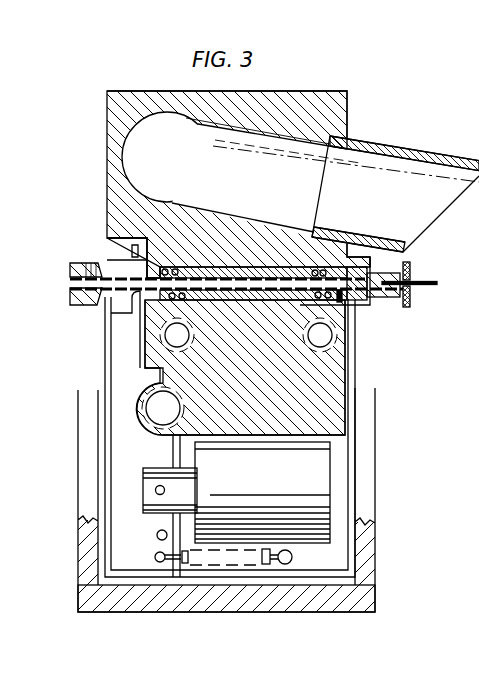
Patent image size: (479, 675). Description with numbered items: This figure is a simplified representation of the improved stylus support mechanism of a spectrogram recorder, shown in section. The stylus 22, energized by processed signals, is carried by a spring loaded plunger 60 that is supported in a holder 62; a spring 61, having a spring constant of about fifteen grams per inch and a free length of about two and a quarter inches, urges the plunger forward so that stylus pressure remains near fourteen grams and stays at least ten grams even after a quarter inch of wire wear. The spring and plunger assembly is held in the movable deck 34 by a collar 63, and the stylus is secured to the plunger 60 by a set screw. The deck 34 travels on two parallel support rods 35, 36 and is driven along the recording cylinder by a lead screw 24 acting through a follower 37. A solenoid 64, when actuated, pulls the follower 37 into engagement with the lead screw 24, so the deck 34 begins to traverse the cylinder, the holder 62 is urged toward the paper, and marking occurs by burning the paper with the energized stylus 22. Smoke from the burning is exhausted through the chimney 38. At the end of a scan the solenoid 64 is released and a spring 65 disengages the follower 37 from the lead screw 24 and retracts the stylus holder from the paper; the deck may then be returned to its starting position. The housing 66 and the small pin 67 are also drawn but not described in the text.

The stylus 22 is at (421, 283).
The lead screw 24 is at (158, 398).
The movable deck 34 is at (338, 384).
The support rod 35 is at (163, 334).
The support rod 36 is at (335, 341).
The follower 37 is at (119, 353).
The chimney 38 is at (397, 143).
The spring loaded plunger 60 is at (408, 286).
The spring 61 is at (349, 300).
The holder 62 is at (388, 298).
The collar 63 is at (72, 297).
The solenoid 64 is at (318, 475).
The spring 65 is at (210, 565).
The housing 66 is at (300, 606).
The pin 67 is at (157, 536).